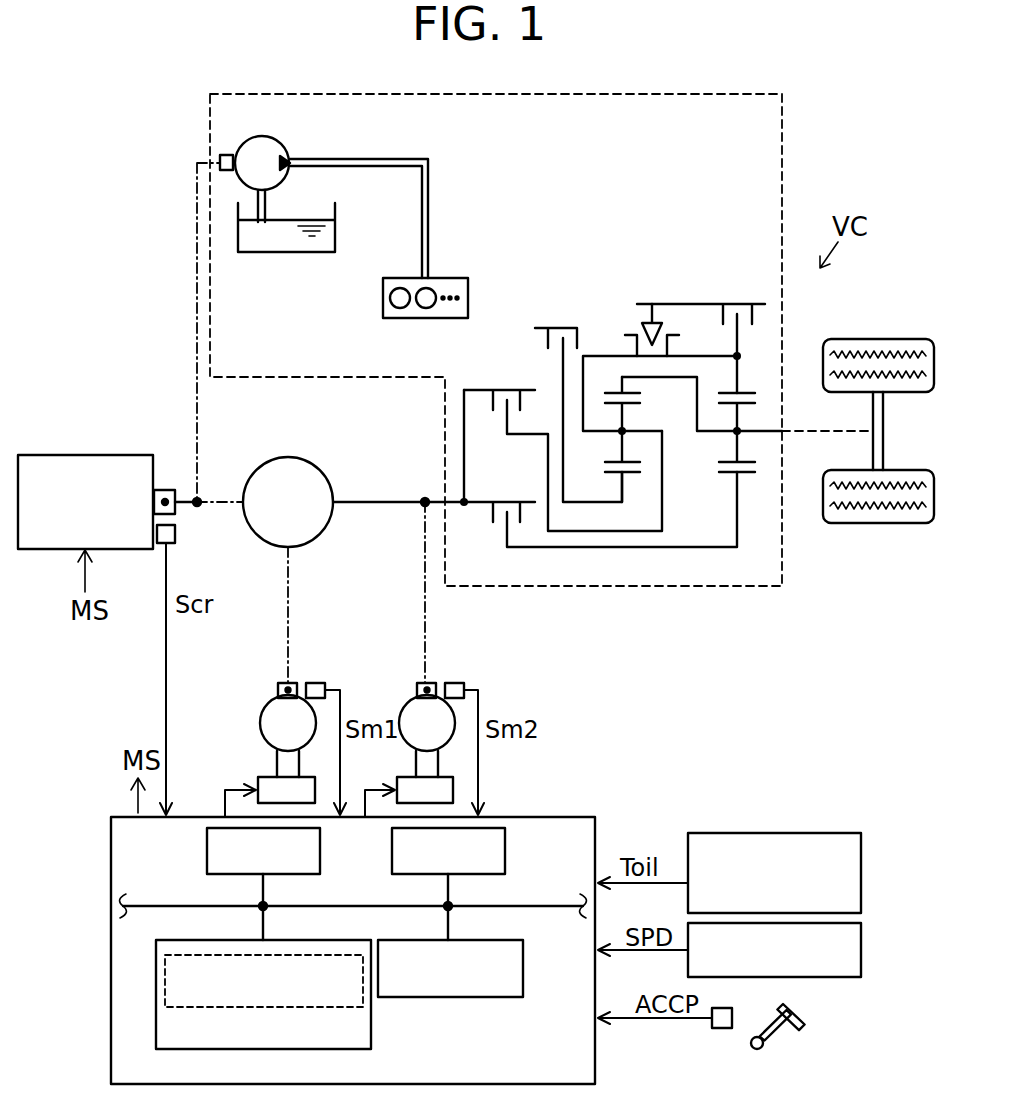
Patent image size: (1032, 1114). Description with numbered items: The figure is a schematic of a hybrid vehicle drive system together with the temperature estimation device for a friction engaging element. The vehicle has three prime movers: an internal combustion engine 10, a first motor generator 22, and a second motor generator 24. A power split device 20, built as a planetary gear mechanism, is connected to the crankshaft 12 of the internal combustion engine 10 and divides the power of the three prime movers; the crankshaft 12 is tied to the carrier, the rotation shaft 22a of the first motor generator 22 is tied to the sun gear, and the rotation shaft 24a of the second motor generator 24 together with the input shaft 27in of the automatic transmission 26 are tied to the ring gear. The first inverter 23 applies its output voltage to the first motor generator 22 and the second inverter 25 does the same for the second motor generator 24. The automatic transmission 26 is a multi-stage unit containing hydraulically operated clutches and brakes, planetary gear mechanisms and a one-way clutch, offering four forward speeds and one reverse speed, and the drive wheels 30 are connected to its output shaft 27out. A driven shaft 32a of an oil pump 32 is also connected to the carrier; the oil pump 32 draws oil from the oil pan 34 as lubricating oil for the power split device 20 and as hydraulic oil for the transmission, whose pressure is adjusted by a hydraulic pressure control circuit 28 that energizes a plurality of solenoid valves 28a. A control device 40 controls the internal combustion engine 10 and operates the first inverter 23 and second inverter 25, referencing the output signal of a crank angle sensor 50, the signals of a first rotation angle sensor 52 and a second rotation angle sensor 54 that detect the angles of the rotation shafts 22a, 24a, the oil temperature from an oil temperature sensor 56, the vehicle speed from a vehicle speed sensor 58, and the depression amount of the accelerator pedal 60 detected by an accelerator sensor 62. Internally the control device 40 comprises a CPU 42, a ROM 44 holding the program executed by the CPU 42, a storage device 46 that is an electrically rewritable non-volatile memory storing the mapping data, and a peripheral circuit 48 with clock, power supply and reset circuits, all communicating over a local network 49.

The internal combustion engine 10 is at (85, 453).
The crankshaft 12 is at (163, 489).
The power split device 20 is at (333, 467).
The first motor generator 22 is at (260, 728).
The rotation shaft 22a is at (278, 690).
The first inverter 23 is at (315, 790).
The second motor generator 24 is at (400, 714).
The rotation shaft 24a is at (420, 682).
The second inverter 25 is at (453, 790).
The automatic transmission 26 is at (783, 150).
The input shaft 27in is at (464, 505).
The output shaft 27out is at (755, 431).
The hydraulic pressure control circuit 28 is at (429, 292).
The solenoid valve 28a is at (400, 308).
The drive wheels 30 is at (880, 338).
The oil pump 32 is at (320, 188).
The driven shaft 32a is at (226, 154).
The oil pan 34 is at (335, 232).
The control device 40 is at (560, 816).
The CPU 42 is at (320, 852).
The ROM 44 is at (505, 852).
The storage device 46 is at (318, 940).
The peripheral circuit 48 is at (470, 940).
The local network 49 is at (488, 906).
The crank angle sensor 50 is at (166, 546).
The first rotation angle sensor 52 is at (316, 682).
The second rotation angle sensor 54 is at (455, 682).
The oil temperature sensor 56 is at (861, 883).
The vehicle speed sensor 58 is at (861, 950).
The accelerator pedal 60 is at (797, 1012).
The accelerator sensor 62 is at (722, 1008).